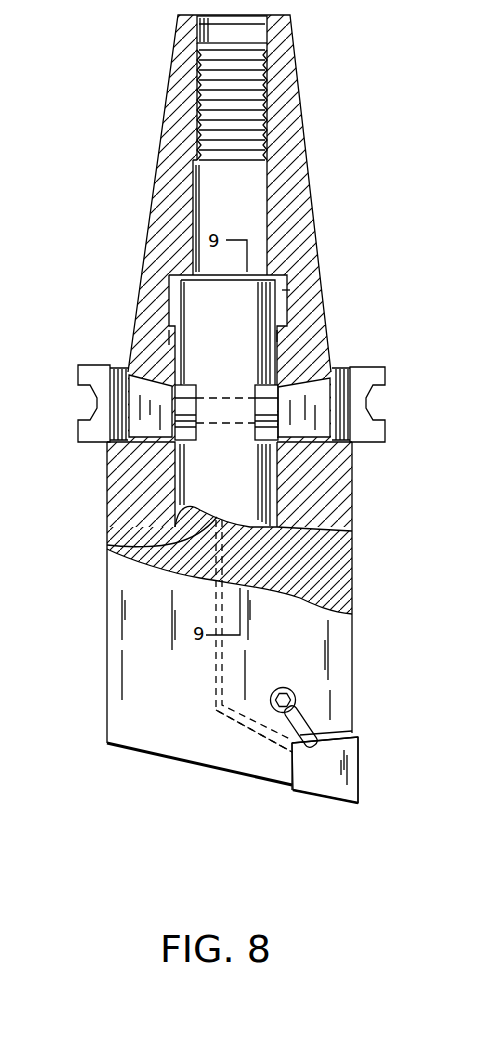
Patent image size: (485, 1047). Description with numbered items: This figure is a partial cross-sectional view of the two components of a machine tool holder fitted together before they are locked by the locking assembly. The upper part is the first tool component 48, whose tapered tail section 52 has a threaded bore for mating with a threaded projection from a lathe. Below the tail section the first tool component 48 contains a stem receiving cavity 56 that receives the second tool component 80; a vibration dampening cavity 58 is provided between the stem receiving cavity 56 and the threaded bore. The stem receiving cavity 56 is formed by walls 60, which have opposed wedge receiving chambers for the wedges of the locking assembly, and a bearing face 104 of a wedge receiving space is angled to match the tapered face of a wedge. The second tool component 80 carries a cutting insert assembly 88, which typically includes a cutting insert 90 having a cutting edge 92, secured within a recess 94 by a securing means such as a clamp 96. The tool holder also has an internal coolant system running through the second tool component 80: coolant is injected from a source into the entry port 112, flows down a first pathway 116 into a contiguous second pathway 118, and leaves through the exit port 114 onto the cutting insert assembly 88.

The tapered tail section 52 is at (151, 113).
The first tool component 48 is at (203, 327).
The vibration dampening cavity 58 is at (282, 290).
The stem receiving cavity 56 is at (283, 343).
The recess 94 is at (305, 370).
The walls 60 is at (170, 343).
The bearing face 104 is at (190, 390).
The second tool component 80 is at (97, 691).
The entry port 112 is at (107, 545).
The first pathway 116 is at (216, 613).
The clamp 96 is at (292, 690).
The cutting insert assembly 88 is at (372, 739).
The cutting insert 90 is at (323, 777).
The cutting edge 92 is at (358, 798).
The exit port 114 is at (290, 750).
The second pathway 118 is at (230, 723).